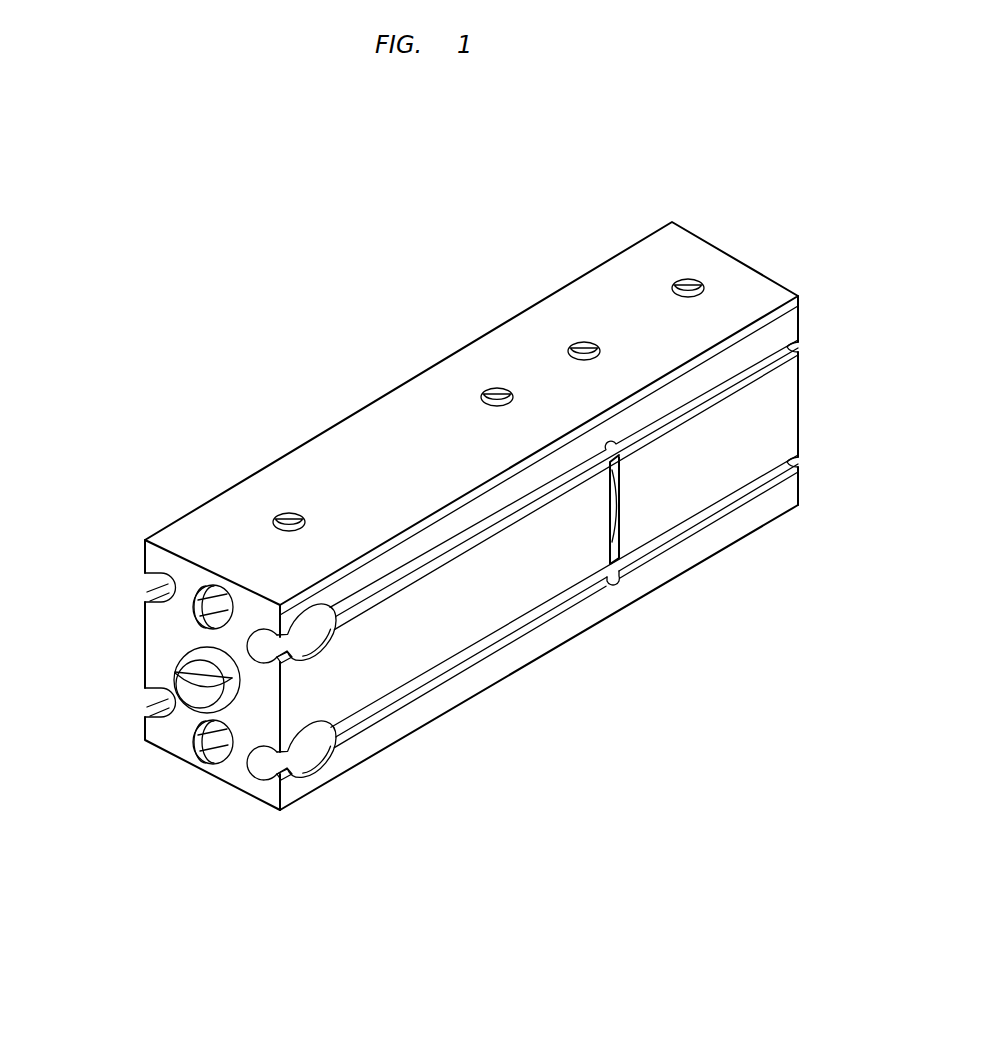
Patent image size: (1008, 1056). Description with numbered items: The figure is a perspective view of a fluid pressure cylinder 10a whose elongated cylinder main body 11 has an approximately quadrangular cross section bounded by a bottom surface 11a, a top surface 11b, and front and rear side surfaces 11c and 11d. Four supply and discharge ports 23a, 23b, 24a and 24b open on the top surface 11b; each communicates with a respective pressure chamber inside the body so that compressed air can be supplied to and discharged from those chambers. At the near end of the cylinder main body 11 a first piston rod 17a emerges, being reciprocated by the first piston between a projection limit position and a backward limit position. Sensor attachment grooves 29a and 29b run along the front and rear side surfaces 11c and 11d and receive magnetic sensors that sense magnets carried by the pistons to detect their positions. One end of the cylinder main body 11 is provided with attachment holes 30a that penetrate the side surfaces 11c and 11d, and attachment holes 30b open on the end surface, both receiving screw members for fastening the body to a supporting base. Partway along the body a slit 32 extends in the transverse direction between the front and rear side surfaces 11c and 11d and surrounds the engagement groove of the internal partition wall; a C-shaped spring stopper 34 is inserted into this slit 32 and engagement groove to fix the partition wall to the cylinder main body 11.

The fluid pressure cylinder 10a is at (744, 210).
The cylinder main body 11 is at (785, 424).
The bottom surface 11a is at (205, 772).
The top surface 11b is at (752, 290).
The front side surface 11c is at (503, 607).
The rear side surface 11d is at (147, 648).
The first piston rod 17a is at (190, 712).
The supply and discharge port 23a is at (285, 512).
The supply and discharge port 23b is at (495, 389).
The supply and discharge port 24a is at (582, 343).
The supply and discharge port 24b is at (687, 279).
The sensor attachment groove 29a is at (398, 590).
The sensor attachment groove 29b is at (153, 583).
The attachment hole 30a is at (326, 783).
The attachment hole 30b is at (197, 610).
The slit 32 is at (613, 543).
The stopper 34 is at (615, 510).